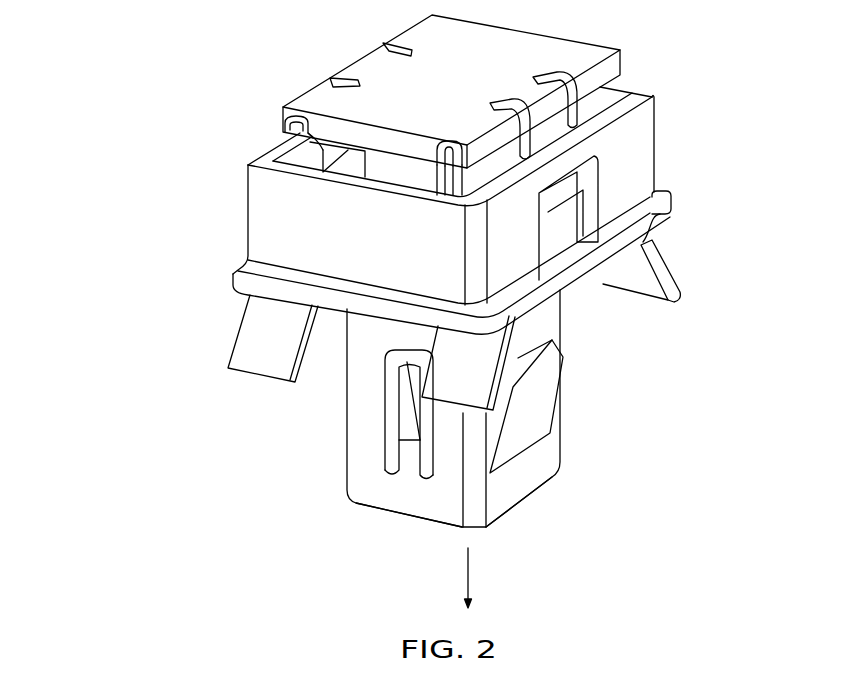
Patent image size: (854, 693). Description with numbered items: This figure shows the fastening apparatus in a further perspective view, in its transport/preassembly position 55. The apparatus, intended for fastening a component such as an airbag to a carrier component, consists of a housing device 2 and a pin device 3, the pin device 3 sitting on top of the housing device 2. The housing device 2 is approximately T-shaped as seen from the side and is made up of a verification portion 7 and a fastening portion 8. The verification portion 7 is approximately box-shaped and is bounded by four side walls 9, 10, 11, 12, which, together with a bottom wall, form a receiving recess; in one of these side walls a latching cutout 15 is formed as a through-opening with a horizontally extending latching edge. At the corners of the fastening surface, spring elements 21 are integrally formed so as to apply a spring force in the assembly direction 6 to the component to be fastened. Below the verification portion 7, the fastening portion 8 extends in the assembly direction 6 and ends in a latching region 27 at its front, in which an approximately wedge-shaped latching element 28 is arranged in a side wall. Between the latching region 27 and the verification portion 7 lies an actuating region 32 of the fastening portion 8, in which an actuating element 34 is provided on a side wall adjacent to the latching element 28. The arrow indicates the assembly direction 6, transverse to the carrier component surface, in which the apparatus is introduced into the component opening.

The transport/preassembly position 55 is at (143, 148).
The pin device 3 is at (342, 107).
The housing device 2 is at (638, 148).
The side wall 12 is at (248, 150).
The verification portion 7 is at (240, 230).
The side wall 9 is at (277, 243).
The side wall 11 is at (663, 107).
The side wall 10 is at (638, 183).
The latching cutout 15 is at (570, 227).
The spring element 21 is at (257, 340).
The fastening portion 8 is at (572, 338).
The actuating region 32 is at (325, 392).
The actuating element 34 is at (402, 422).
The latching element 28 is at (538, 398).
The latching region 27 is at (593, 455).
The assembly direction 6 is at (468, 575).